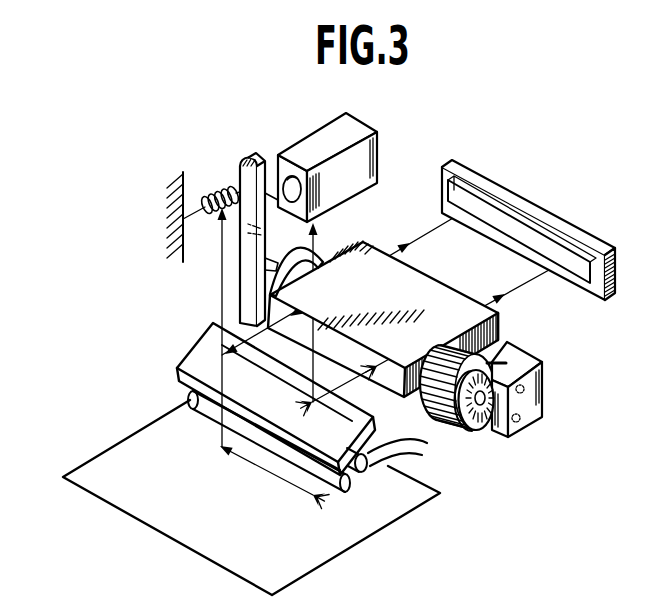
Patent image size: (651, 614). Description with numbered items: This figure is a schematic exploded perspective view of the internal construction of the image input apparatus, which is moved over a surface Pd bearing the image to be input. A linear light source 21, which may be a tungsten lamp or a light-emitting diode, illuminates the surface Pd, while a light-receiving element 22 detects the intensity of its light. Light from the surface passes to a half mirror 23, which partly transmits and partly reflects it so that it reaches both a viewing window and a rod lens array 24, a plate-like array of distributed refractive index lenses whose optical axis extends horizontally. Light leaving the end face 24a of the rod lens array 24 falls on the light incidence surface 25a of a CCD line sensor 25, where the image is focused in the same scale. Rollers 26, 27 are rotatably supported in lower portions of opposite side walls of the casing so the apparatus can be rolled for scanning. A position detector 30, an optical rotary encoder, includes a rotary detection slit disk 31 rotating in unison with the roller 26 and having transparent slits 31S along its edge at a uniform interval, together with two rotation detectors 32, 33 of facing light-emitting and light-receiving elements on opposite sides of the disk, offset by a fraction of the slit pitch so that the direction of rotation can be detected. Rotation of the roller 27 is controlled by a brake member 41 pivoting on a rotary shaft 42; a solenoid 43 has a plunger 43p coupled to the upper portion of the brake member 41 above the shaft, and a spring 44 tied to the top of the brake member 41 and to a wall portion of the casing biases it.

The linear light source 21 is at (339, 492).
The light-receiving element 22 is at (370, 471).
The half mirror 23 is at (198, 352).
The rod lens array 24 is at (413, 285).
The end face of the rod lens array 24a is at (500, 325).
The CCD line sensor 25 is at (590, 203).
The light incidence surface 25a is at (462, 195).
The roller 26 is at (440, 415).
The roller 27 is at (300, 255).
The position detector 30 is at (519, 444).
The rotary detection slit disk 31 is at (462, 432).
The transparent slits 31S is at (484, 430).
The rotation detector 32 is at (525, 389).
The rotation detector 33 is at (521, 419).
The brake member 41 is at (247, 298).
The rotary shaft 42 is at (262, 229).
The solenoid 43 is at (430, 157).
The plunger 43p is at (288, 186).
The spring 44 is at (212, 195).
The surface bearing an image Pd is at (218, 552).